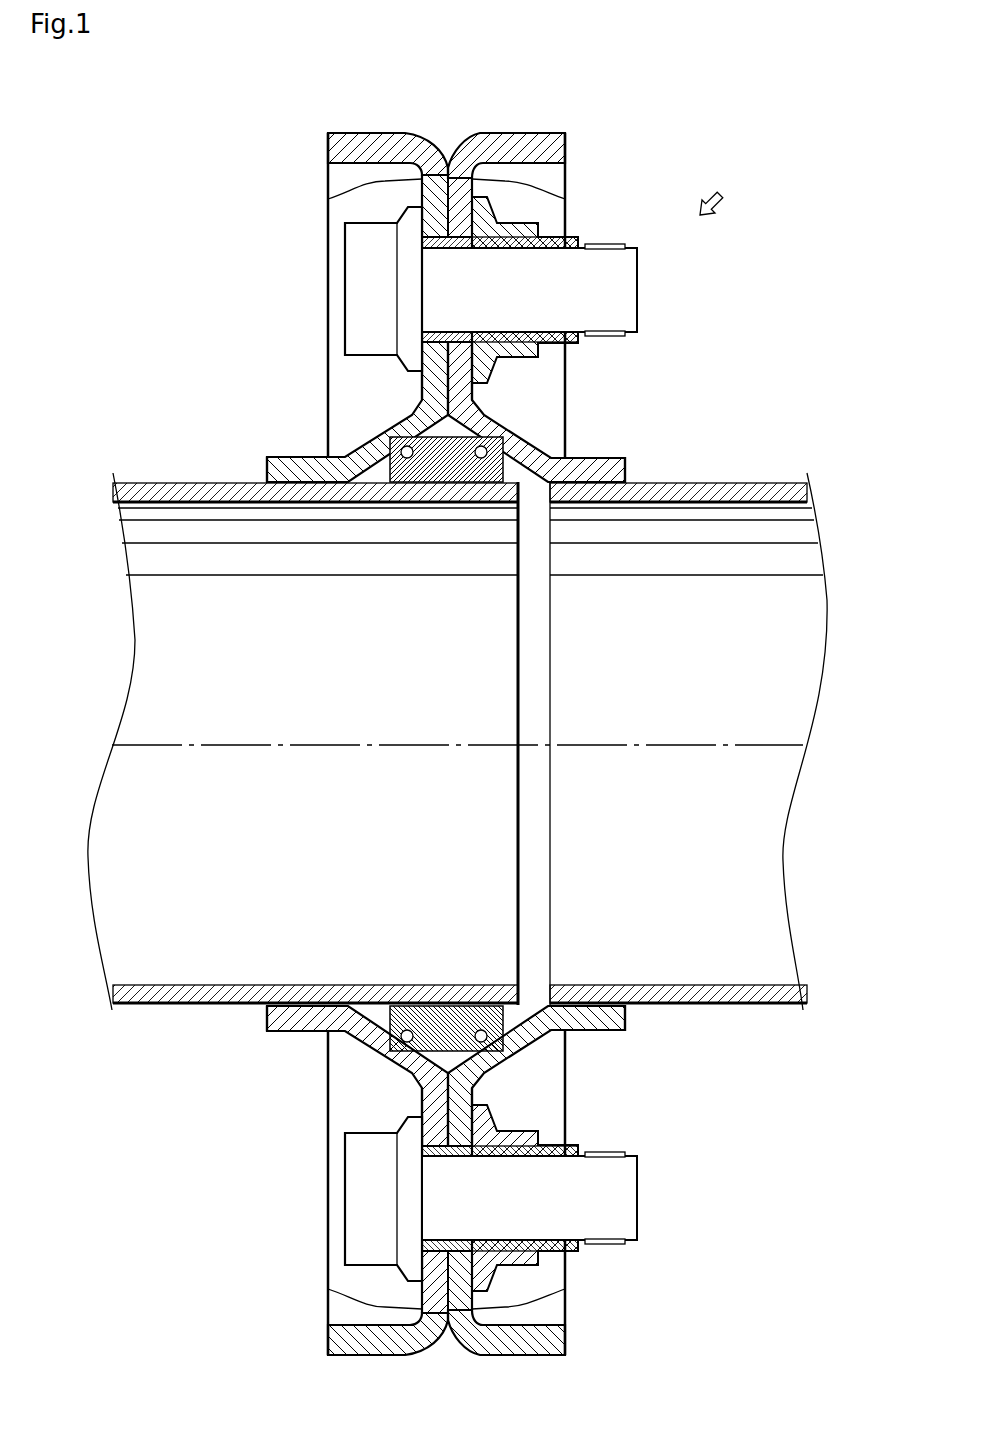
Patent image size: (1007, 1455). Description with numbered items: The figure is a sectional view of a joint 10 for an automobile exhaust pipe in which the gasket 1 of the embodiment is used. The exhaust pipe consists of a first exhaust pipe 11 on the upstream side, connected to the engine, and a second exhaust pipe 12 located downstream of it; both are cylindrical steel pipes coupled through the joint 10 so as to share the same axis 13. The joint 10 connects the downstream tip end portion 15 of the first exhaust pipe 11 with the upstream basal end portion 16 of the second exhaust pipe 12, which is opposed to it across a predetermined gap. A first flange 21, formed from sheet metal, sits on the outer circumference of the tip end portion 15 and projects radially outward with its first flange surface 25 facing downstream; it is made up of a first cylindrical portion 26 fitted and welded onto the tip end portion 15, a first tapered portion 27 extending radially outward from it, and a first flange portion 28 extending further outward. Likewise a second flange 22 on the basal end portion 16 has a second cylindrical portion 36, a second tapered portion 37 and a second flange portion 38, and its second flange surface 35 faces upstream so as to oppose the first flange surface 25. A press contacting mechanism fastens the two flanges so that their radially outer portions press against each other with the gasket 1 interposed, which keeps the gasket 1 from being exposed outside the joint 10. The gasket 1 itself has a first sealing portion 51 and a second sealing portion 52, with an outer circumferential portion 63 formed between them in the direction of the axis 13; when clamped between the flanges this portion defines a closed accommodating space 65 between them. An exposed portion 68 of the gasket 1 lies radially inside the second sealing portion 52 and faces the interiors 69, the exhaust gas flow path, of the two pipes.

The gasket 1 is at (426, 514).
The joint 10 is at (722, 185).
The first exhaust pipe 11 is at (178, 483).
The second exhaust pipe 12 is at (730, 483).
The axis 13 is at (660, 746).
The tip end portion 15 is at (318, 508).
The basal end portion 16 is at (588, 508).
The first flange 21 is at (310, 162).
The second flange 22 is at (588, 162).
The first flange surface 25 is at (413, 437).
The first cylindrical portion 26 is at (270, 457).
The first tapered portion 27 is at (418, 413).
The first flange portion 28 is at (328, 198).
The second flange surface 35 is at (482, 437).
The second cylindrical portion 36 is at (623, 457).
The second tapered portion 37 is at (490, 417).
The second flange portion 38 is at (565, 198).
The first sealing portion 51 is at (380, 1052).
The second sealing portion 52 is at (535, 1042).
The outer circumferential portion 63 is at (440, 1078).
The accommodating space 65 is at (460, 1065).
The exposed portion 68 is at (523, 1005).
The interiors 69 is at (300, 708).